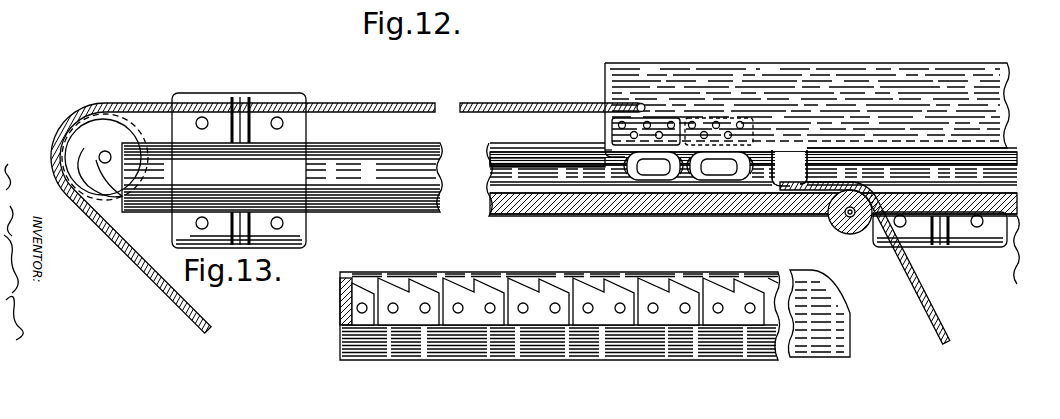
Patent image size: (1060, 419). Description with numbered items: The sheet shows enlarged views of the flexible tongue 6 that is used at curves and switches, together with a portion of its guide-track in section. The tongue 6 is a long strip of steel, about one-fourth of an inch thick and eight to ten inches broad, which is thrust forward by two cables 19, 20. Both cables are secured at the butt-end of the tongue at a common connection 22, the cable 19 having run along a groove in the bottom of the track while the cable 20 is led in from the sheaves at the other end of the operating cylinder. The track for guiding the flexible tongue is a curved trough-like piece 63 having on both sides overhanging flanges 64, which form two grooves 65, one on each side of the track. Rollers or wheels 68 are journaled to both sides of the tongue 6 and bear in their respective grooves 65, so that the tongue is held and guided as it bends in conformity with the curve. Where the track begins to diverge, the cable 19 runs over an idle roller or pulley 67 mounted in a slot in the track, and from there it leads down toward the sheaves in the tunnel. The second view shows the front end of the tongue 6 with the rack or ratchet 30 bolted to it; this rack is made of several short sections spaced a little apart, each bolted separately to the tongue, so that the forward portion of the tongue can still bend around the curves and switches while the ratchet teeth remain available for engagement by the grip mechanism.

In FIG. 12, the tongue 6 is at (918, 64).
In FIG. 13, the tongue 6 is at (725, 274).
In FIG. 12, the cable 19 is at (908, 284).
In FIG. 12, the cable 20 is at (391, 104).
In FIG. 12, the connection point 22 is at (640, 100).
In FIG. 13, the rack or ratchet 30 is at (742, 292).
In FIG. 12, the curved trough-like track 63 is at (438, 212).
In FIG. 12, the overhanging flanges 64 is at (490, 143).
In FIG. 12, the grooves 65 is at (490, 172).
In FIG. 12, the idle roller or pulley 67 is at (857, 236).
In FIG. 12, the rollers or wheels 68 is at (648, 184).